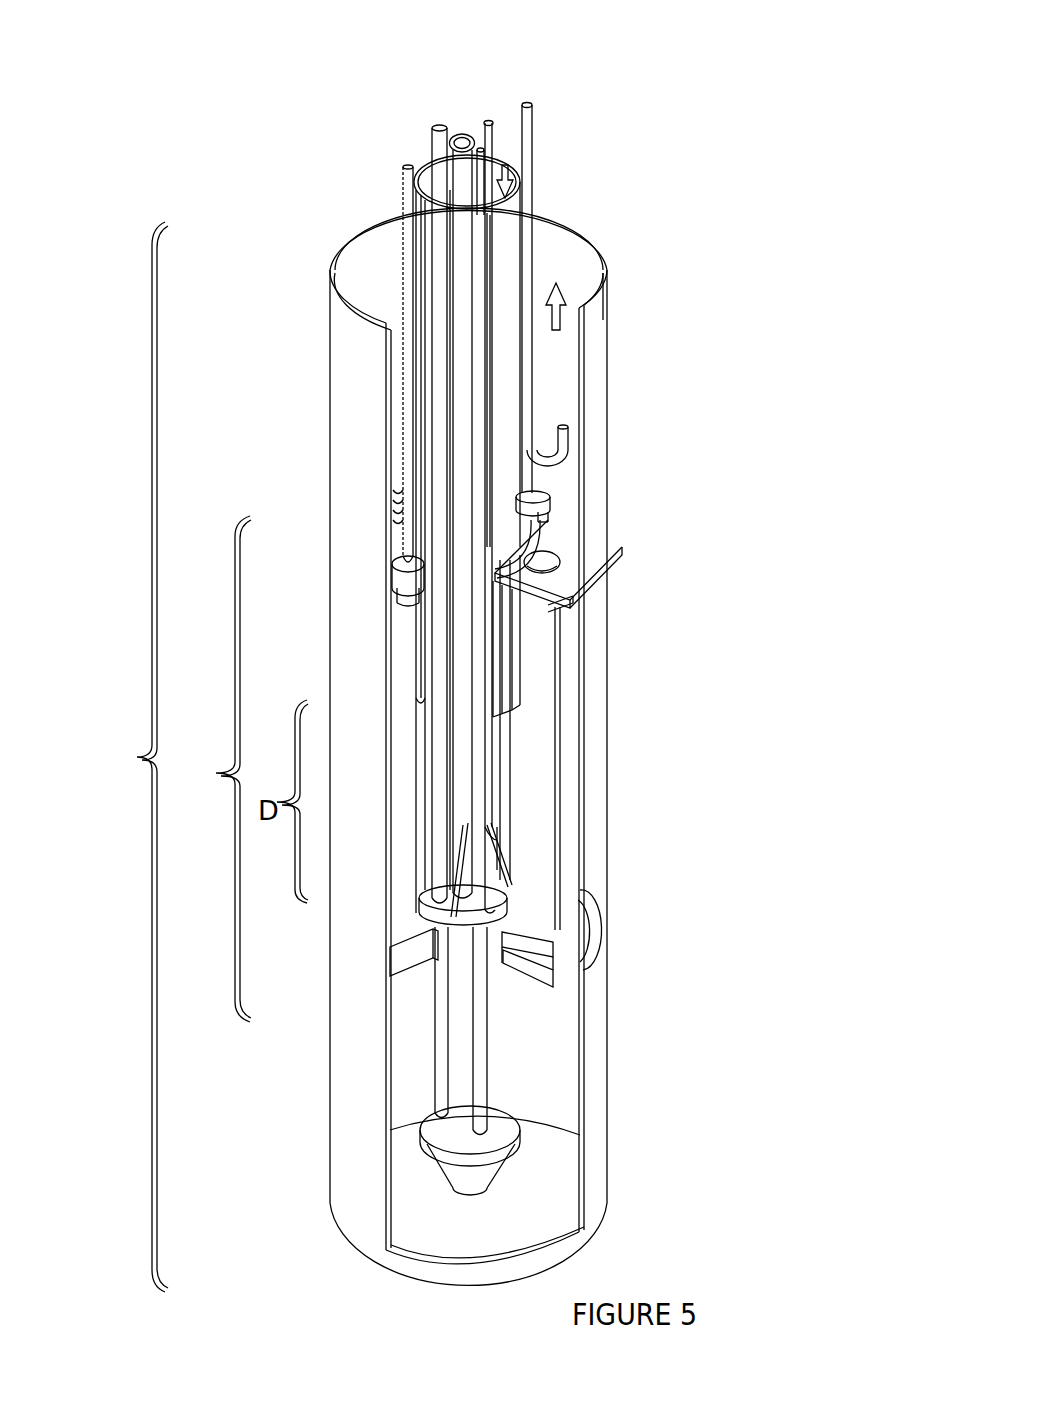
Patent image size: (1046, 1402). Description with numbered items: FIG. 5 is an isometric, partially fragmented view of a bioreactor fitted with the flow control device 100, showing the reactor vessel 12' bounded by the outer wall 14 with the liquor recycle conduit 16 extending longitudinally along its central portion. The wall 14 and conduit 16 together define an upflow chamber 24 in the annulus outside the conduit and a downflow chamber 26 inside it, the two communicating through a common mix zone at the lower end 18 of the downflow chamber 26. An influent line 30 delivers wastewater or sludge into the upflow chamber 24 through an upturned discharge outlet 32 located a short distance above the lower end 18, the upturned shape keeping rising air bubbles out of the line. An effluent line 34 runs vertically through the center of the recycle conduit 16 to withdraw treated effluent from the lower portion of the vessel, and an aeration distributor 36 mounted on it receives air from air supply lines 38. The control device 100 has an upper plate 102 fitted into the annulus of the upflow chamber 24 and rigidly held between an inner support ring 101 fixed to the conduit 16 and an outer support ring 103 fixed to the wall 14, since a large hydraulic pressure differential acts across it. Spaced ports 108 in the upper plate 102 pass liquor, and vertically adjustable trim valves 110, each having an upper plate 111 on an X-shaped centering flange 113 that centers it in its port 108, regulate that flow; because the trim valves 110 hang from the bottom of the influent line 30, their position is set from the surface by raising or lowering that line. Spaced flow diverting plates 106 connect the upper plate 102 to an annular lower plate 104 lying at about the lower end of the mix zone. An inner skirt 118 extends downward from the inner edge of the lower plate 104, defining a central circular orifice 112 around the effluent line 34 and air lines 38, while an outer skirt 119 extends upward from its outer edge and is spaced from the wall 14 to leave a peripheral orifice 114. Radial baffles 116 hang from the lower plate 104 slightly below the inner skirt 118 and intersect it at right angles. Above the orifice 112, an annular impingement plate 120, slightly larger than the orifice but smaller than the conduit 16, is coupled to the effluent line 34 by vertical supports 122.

The reactor vessel 12' is at (126, 757).
The outer wall 14 is at (608, 352).
The liquor recycle conduit 16 is at (508, 250).
The lower end 18 is at (432, 655).
The upflow chamber 24 is at (560, 300).
The downflow chamber 26 is at (505, 183).
The influent line 30 is at (528, 119).
The upturned discharge outlet 32 is at (568, 428).
The effluent line 34 is at (472, 140).
The aeration distributor 36 is at (500, 1128).
The air supply line 38 is at (442, 127).
The flow control device 100 is at (210, 769).
The inner support ring 101 is at (545, 507).
The upper plate 102 is at (545, 563).
The outer support ring 103 is at (585, 597).
The lower plate 104 is at (410, 927).
The flow diverting plates 106 is at (540, 670).
The ports 108 is at (556, 541).
The trim valve 110 is at (564, 487).
The upper plate 111 is at (373, 538).
The central circular orifice 112 is at (520, 918).
The centering flange 113 is at (402, 590).
The peripheral orifice 114 is at (587, 924).
The radial baffles 116 is at (553, 972).
The inner skirt 118 is at (432, 943).
The outer skirt 119 is at (570, 945).
The impingement plate 120 is at (497, 908).
The vertical supports 122 is at (497, 888).